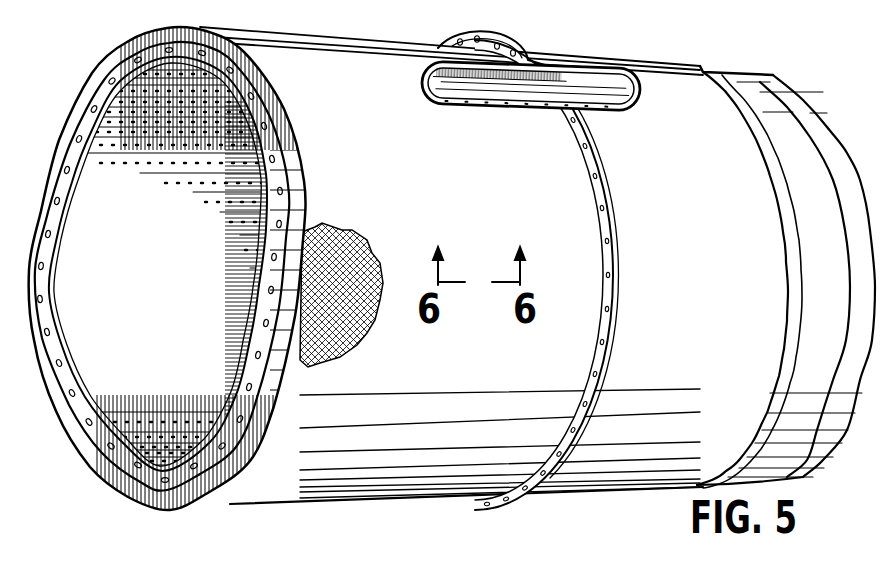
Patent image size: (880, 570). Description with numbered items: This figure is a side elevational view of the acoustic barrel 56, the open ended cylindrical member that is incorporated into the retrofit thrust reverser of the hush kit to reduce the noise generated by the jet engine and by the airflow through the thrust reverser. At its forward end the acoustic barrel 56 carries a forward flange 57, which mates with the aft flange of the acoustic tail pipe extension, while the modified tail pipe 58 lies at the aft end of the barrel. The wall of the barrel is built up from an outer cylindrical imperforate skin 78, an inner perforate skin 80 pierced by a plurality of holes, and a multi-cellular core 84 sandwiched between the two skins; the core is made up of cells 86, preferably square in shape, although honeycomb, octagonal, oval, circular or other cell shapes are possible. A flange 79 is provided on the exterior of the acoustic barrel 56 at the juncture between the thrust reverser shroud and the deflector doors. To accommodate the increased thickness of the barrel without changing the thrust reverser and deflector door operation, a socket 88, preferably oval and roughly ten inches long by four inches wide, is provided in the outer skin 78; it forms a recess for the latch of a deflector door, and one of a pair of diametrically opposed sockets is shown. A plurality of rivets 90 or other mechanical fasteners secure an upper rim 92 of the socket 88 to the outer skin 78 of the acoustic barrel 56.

The acoustic barrel 56 is at (323, 505).
The forward flange 57 is at (120, 473).
The modified tail pipe 58 is at (827, 127).
The outer cylindrical imperforate skin 78 is at (687, 340).
The flange 79 is at (613, 218).
The inner perforate skin 80 is at (142, 333).
The multi-cellular core 84 is at (357, 233).
The cells 86 is at (352, 281).
The socket 88 is at (551, 88).
The rivets 90 is at (535, 126).
The upper rim 92 is at (554, 94).